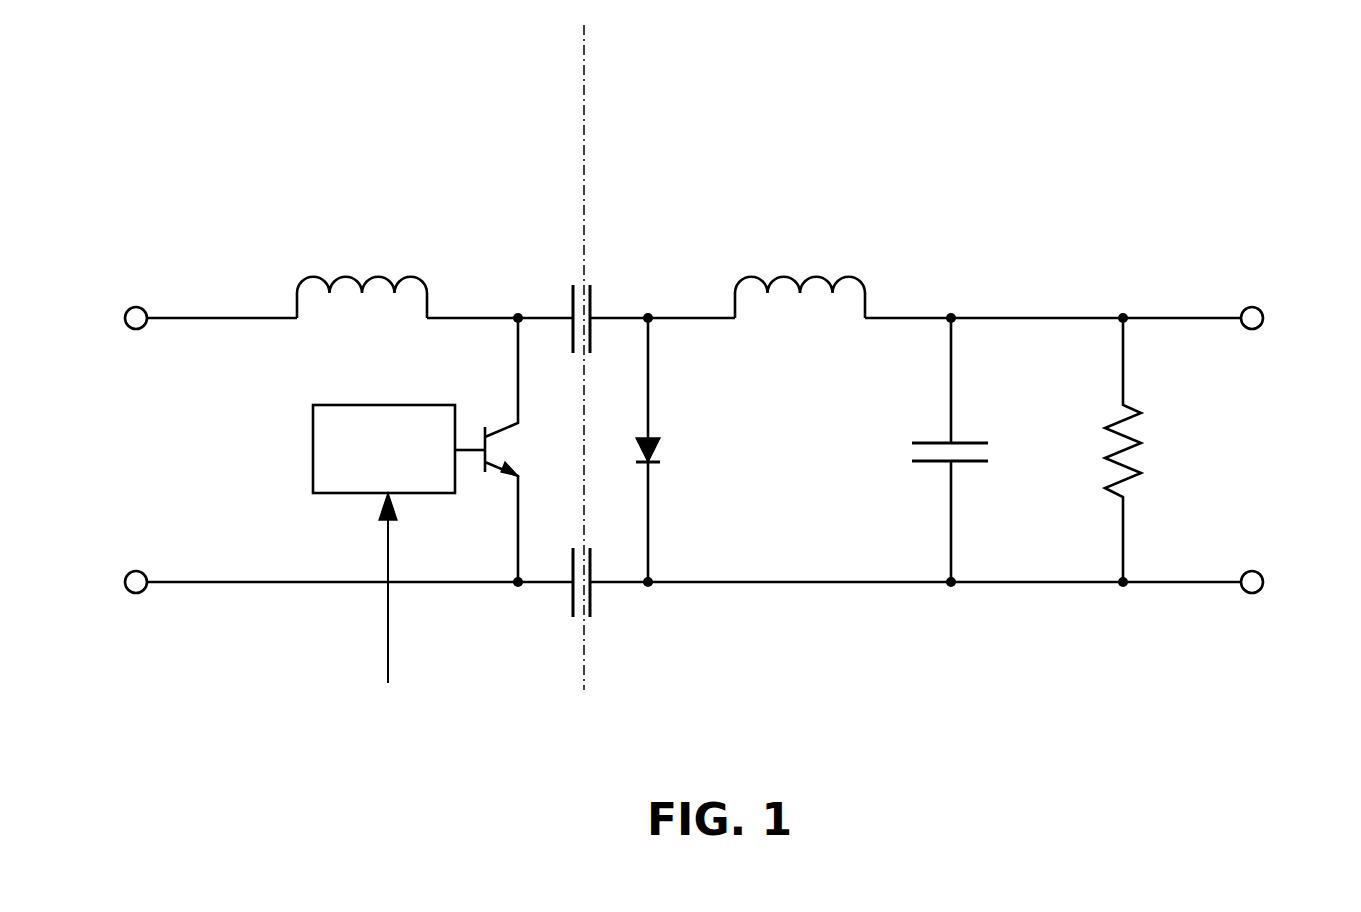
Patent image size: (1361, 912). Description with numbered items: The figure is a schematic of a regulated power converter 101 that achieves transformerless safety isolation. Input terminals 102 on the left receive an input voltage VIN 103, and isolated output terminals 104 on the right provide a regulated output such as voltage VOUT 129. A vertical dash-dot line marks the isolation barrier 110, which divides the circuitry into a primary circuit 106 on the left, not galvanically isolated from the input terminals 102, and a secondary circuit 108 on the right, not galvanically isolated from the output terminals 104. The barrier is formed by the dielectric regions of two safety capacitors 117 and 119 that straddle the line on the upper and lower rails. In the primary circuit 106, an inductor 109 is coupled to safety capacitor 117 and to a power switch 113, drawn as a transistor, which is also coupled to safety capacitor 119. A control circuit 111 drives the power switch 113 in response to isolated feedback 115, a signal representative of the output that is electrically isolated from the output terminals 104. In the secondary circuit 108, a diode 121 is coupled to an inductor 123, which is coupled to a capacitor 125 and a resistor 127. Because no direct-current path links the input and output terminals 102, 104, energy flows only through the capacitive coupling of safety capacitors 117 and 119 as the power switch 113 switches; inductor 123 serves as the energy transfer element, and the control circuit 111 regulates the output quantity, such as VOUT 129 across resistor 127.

The power converter 101 is at (1265, 212).
The input terminals 102 is at (120, 292).
The input voltage VIN 103 is at (110, 458).
The output terminals 104 is at (1272, 307).
The primary circuit 106 is at (527, 127).
The secondary circuit 108 is at (678, 127).
The inductor 109 is at (370, 263).
The isolation barrier 110 is at (590, 692).
The control circuit 111 is at (312, 434).
The power switch 113 is at (478, 496).
The isolated feedback 115 is at (376, 745).
The safety capacitor 117 is at (554, 273).
The safety capacitor 119 is at (623, 606).
The diode 121 is at (672, 448).
The inductor 123 is at (800, 264).
The capacitor 125 is at (913, 450).
The resistor 127 is at (1112, 440).
The output voltage VOUT 129 is at (1286, 440).